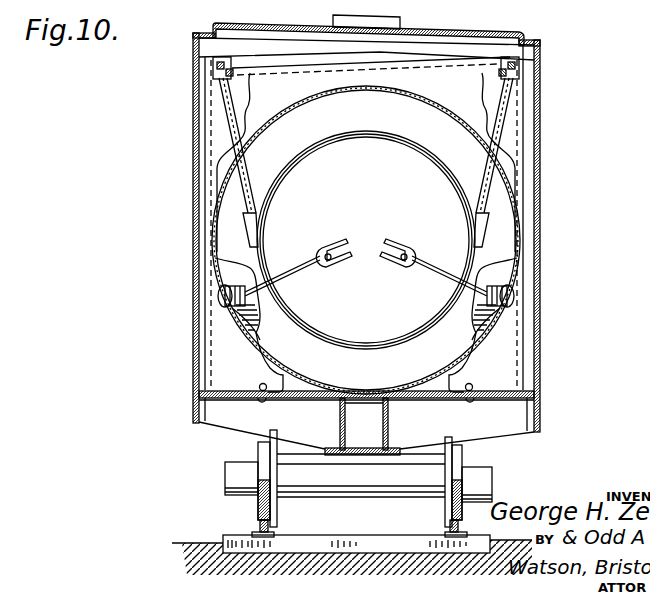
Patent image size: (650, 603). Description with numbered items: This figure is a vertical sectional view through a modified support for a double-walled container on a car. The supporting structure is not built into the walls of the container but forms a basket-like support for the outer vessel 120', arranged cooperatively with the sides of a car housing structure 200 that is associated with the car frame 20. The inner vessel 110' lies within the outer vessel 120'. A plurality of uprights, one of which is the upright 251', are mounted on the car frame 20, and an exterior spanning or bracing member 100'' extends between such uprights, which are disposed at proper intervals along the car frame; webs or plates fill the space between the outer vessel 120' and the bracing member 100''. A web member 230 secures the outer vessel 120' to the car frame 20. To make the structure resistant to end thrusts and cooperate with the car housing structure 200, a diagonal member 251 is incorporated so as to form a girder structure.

The car housing structure 200 is at (540, 162).
The diagonal member 251 is at (555, 217).
The upright 251' is at (167, 223).
The car frame 20 is at (541, 415).
The outer vessel 120' is at (366, 240).
The inner vessel 110' is at (366, 226).
The exterior spanning or bracing member 100'' is at (366, 150).
The web member 230 is at (282, 382).